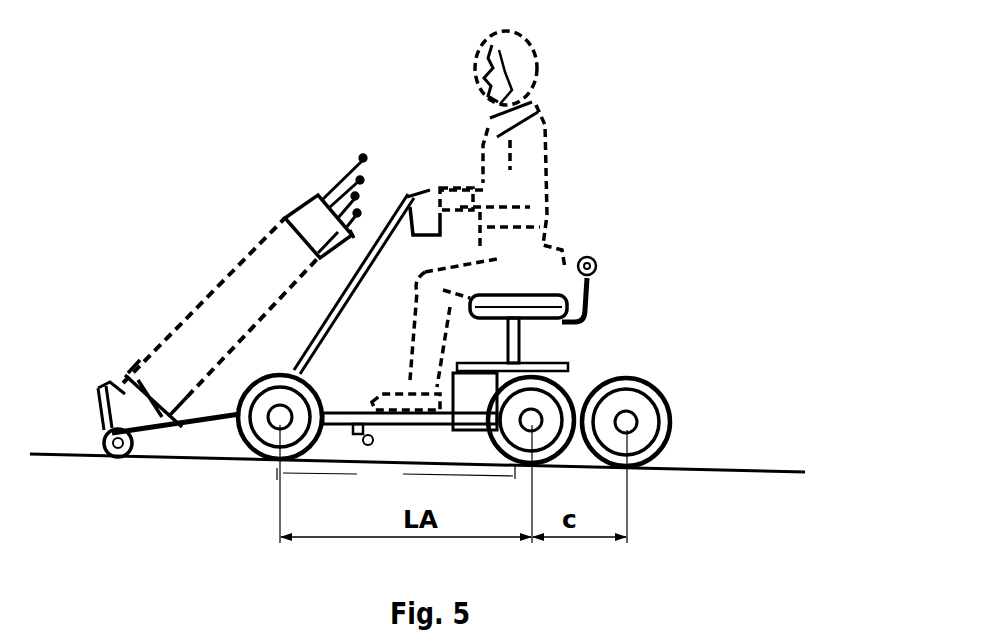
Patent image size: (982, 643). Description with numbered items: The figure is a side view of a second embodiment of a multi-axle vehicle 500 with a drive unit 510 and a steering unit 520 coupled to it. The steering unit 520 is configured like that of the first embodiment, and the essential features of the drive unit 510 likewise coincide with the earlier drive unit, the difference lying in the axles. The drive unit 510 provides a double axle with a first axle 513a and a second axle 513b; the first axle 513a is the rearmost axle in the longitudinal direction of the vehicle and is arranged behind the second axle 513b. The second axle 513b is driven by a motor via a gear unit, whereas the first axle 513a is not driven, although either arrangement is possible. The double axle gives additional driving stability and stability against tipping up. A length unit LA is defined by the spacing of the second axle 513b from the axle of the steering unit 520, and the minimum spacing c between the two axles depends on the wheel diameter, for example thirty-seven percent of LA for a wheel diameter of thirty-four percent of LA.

The multi-axle vehicle 500 is at (572, 178).
The drive unit 510 is at (581, 364).
The first axle 513a is at (640, 430).
The second axle 513b is at (545, 422).
The steering unit 520 is at (252, 223).